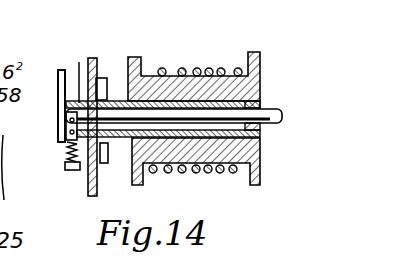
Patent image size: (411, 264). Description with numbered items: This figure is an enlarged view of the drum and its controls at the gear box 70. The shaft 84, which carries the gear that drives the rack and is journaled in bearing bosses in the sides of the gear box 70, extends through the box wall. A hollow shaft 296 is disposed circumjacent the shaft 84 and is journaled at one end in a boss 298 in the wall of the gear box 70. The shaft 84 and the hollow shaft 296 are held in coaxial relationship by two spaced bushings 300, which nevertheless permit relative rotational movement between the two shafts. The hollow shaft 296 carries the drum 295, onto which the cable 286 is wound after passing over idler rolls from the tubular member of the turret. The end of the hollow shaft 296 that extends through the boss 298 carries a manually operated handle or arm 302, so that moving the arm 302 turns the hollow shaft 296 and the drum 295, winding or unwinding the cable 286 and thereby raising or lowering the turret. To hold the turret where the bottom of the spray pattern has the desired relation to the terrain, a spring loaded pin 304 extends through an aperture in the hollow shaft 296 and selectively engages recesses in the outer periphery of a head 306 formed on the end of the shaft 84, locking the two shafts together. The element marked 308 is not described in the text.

The gear box 70 is at (104, 82).
The shaft 84 is at (288, 89).
The cable 286 is at (209, 68).
The drum 295 is at (178, 173).
The hollow shaft 296 is at (117, 100).
The boss 298 is at (108, 144).
The bushings 300 is at (74, 71).
The handle or arm 302 is at (58, 135).
The spring loaded pin 304 is at (68, 170).
The head 306 is at (66, 120).
The bearing housing lower half 308 is at (262, 132).